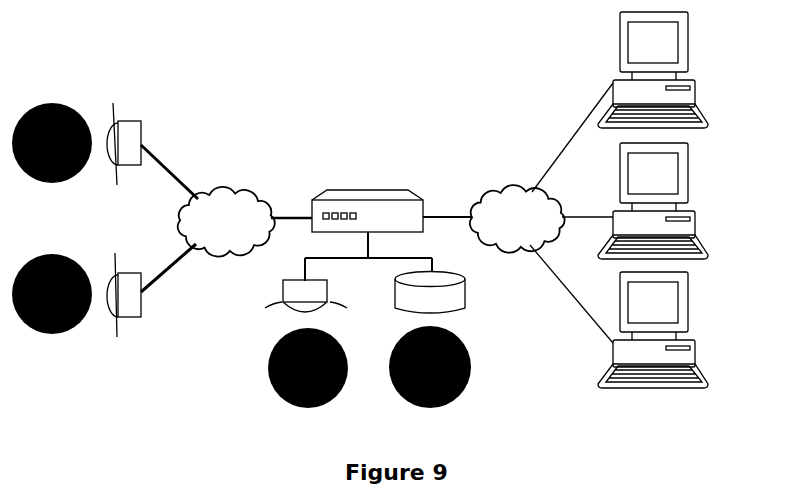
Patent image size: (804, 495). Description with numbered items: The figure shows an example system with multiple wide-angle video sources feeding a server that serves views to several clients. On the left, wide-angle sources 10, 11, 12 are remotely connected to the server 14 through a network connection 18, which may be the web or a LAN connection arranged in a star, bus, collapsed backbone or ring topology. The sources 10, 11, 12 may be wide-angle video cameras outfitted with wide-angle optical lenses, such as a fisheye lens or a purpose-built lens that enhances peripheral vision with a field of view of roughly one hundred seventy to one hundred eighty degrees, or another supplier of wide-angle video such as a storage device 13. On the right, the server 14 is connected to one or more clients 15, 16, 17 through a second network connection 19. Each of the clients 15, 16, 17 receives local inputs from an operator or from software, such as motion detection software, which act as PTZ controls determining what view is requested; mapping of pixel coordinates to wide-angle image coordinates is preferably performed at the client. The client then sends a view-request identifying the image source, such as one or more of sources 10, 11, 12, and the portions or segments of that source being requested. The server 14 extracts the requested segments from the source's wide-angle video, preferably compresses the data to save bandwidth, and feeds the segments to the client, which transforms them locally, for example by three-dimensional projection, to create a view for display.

The wide-angle source 10 is at (133, 122).
The wide-angle source 11 is at (133, 328).
The wide-angle source 12 is at (267, 315).
The storage device 13 is at (472, 308).
The server 14 is at (368, 183).
The client 15 is at (702, 79).
The client 16 is at (678, 201).
The client 17 is at (678, 330).
The network connection 18 is at (229, 192).
The network connection 19 is at (509, 190).